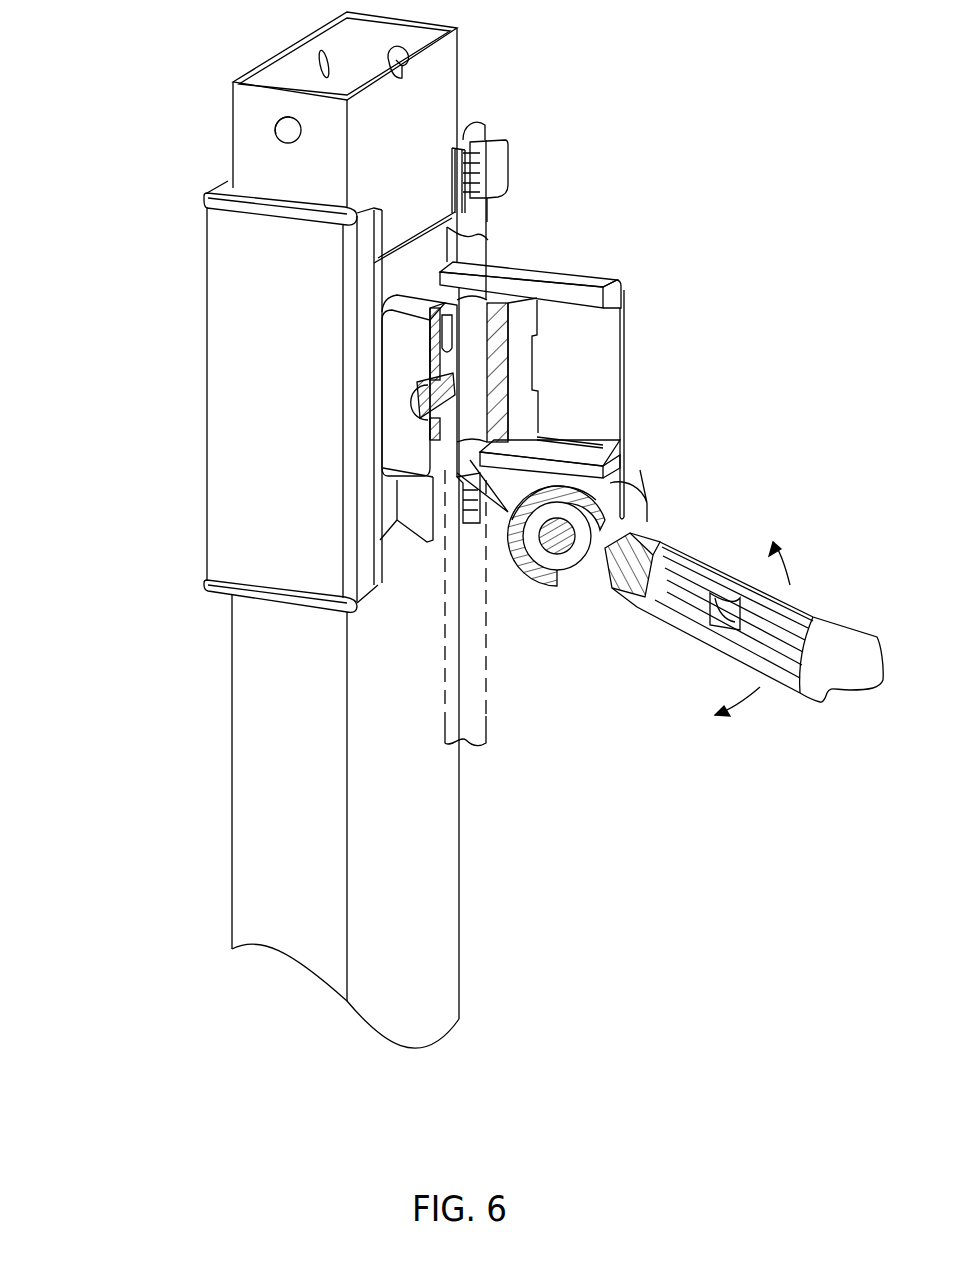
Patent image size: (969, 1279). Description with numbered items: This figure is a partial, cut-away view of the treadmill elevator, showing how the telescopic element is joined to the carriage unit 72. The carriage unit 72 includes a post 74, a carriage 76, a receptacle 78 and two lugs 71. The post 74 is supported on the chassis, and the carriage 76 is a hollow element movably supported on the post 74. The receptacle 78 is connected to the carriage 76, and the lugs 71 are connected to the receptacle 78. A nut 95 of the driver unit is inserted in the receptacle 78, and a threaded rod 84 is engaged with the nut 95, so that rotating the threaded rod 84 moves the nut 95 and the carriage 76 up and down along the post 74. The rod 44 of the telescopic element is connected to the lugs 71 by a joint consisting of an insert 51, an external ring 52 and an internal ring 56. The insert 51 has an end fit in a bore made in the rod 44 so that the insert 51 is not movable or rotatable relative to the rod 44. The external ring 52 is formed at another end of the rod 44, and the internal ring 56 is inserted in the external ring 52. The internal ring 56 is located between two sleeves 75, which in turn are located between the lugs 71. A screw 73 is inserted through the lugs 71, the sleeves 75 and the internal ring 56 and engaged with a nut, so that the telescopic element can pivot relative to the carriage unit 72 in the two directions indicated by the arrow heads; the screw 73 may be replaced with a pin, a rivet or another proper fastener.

The rod 44 is at (847, 643).
The insert 51 is at (662, 597).
The external ring 52 is at (562, 579).
The internal ring 56 is at (534, 568).
The lugs 71 is at (623, 463).
The carriage unit 72 is at (88, 430).
The screw 73 is at (560, 517).
The post 74 is at (248, 675).
The sleeves 75 is at (602, 502).
The carriage 76 is at (237, 412).
The receptacle 78 is at (557, 282).
The threaded rod 84 is at (486, 706).
The nut 95 is at (528, 358).